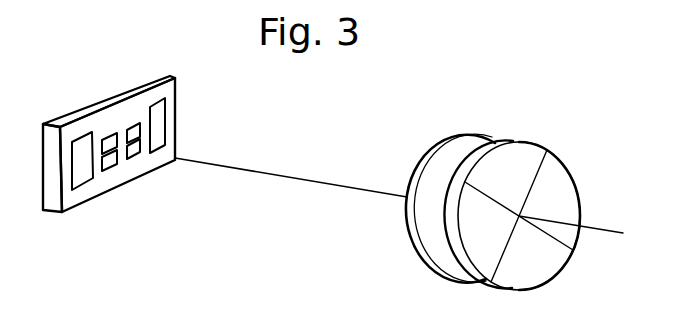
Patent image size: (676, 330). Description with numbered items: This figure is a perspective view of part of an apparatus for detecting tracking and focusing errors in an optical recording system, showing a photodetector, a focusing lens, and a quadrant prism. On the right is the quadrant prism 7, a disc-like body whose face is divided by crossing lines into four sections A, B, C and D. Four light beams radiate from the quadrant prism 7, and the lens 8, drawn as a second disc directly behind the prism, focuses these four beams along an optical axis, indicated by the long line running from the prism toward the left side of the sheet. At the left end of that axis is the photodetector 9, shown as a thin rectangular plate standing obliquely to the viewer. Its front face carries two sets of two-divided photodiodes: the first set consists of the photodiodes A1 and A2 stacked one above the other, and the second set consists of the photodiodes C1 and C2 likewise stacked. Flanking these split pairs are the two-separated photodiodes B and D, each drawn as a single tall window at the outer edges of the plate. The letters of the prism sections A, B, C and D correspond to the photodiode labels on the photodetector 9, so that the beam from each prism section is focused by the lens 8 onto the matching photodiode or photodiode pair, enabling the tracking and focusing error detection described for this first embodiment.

The photodetector 9 is at (158, 80).
The quadrant prism 7 is at (534, 143).
The lens 8 is at (428, 158).
The two-divided photodiode A1 is at (110, 136).
The two-divided photodiode A2 is at (112, 165).
The section / two-separated photodiode B is at (80, 142).
The two-divided photodiode C1 is at (135, 125).
The two-divided photodiode C2 is at (132, 155).
The section / two-separated photodiode D is at (160, 123).
The section A is at (497, 167).
The section C is at (537, 265).